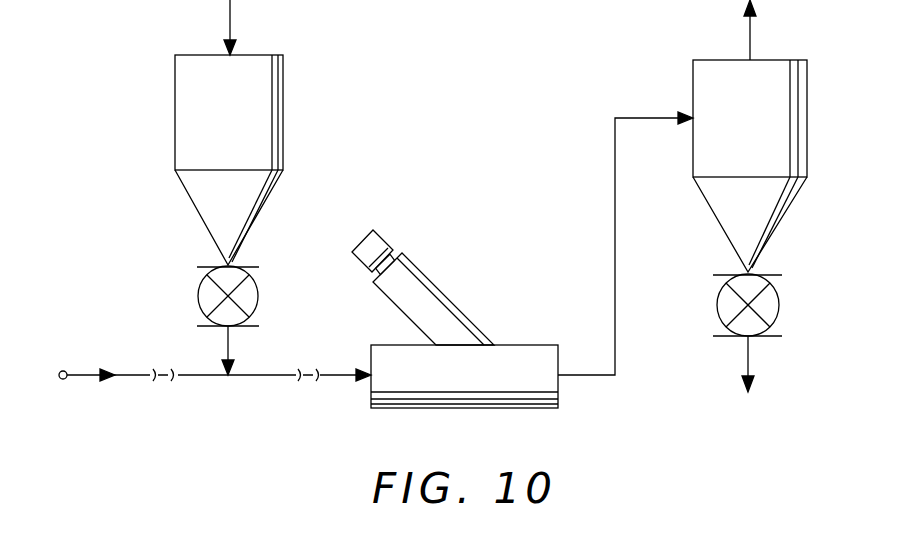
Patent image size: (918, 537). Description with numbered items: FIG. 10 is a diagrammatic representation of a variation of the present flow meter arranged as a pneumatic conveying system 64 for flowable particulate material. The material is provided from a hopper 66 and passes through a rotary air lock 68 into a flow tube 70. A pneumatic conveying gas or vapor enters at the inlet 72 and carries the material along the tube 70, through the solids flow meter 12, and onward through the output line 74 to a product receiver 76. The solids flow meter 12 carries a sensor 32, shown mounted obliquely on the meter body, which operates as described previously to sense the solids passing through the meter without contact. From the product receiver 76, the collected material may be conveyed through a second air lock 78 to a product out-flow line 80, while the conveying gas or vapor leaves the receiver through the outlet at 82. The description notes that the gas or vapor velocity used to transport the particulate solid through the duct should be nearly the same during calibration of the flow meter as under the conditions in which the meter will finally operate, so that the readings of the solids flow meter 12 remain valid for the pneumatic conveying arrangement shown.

The solids flow meter 12 is at (472, 386).
The sensor 32 is at (380, 241).
The processing system 64 is at (454, 116).
The hopper 66 is at (246, 122).
The rotary air lock 68 is at (199, 297).
The flow tube 70 is at (255, 378).
The pneumatic conveying gas or vapor inlet 72 is at (132, 377).
The output line 74 is at (617, 259).
The product receiver 76 is at (760, 132).
The air lock 78 is at (780, 303).
The product out-flow line 80 is at (750, 353).
The gas or vapor outlet 82 is at (750, 27).